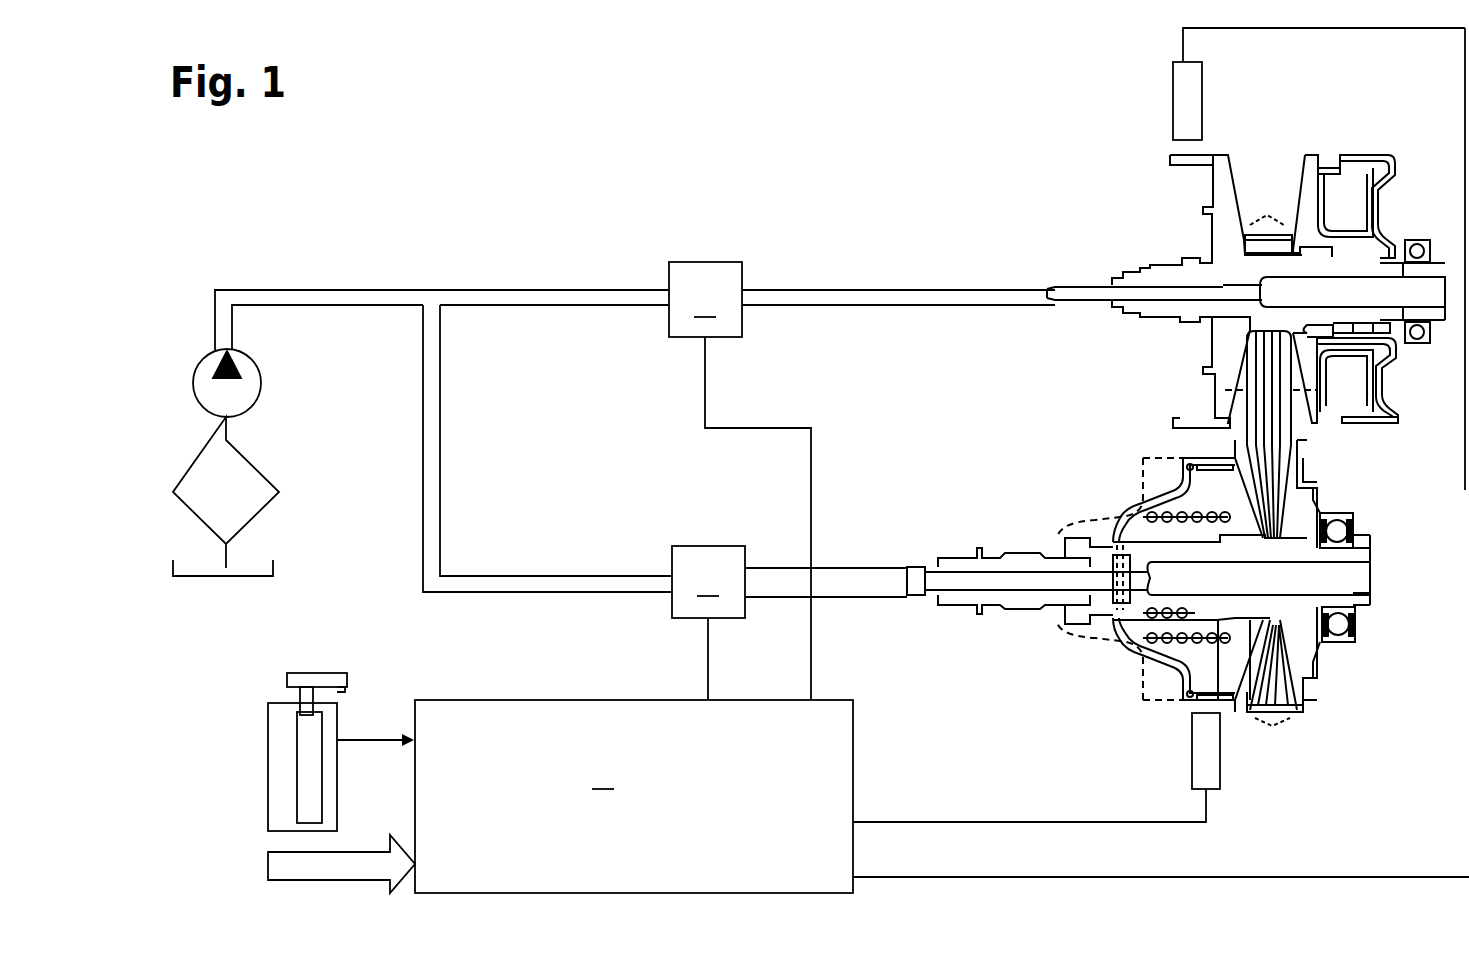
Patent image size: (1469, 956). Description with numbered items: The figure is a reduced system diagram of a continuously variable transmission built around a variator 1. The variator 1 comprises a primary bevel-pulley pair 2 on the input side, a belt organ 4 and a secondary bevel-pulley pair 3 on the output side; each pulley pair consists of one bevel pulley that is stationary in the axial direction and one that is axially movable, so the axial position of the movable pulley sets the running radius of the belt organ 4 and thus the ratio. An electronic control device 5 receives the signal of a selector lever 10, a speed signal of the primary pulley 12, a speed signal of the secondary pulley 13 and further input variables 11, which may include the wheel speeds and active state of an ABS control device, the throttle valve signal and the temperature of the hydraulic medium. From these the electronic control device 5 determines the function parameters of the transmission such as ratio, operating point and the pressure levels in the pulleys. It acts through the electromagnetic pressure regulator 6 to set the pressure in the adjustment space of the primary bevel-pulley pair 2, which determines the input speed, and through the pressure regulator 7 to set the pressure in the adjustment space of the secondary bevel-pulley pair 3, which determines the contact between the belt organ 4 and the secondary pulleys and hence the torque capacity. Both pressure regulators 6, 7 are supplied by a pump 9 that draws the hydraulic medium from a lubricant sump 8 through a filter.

The variator 1 is at (1110, 204).
The primary bevel-pulley pair 2 is at (1343, 132).
The secondary bevel-pulley pair 3 is at (1348, 669).
The belt organ 4 is at (1293, 423).
The electronic control device 5 is at (634, 796).
The electromagnetic pressure regulator 6 is at (705, 299).
The pressure regulator 7 is at (708, 582).
The lubricant sump 8 is at (178, 541).
The pump 9 is at (193, 400).
The selector lever 10 is at (268, 737).
The input variables 11 is at (268, 873).
The speed signal of the primary pulley 12 is at (1202, 113).
The speed signal of the secondary pulley 13 is at (1192, 767).